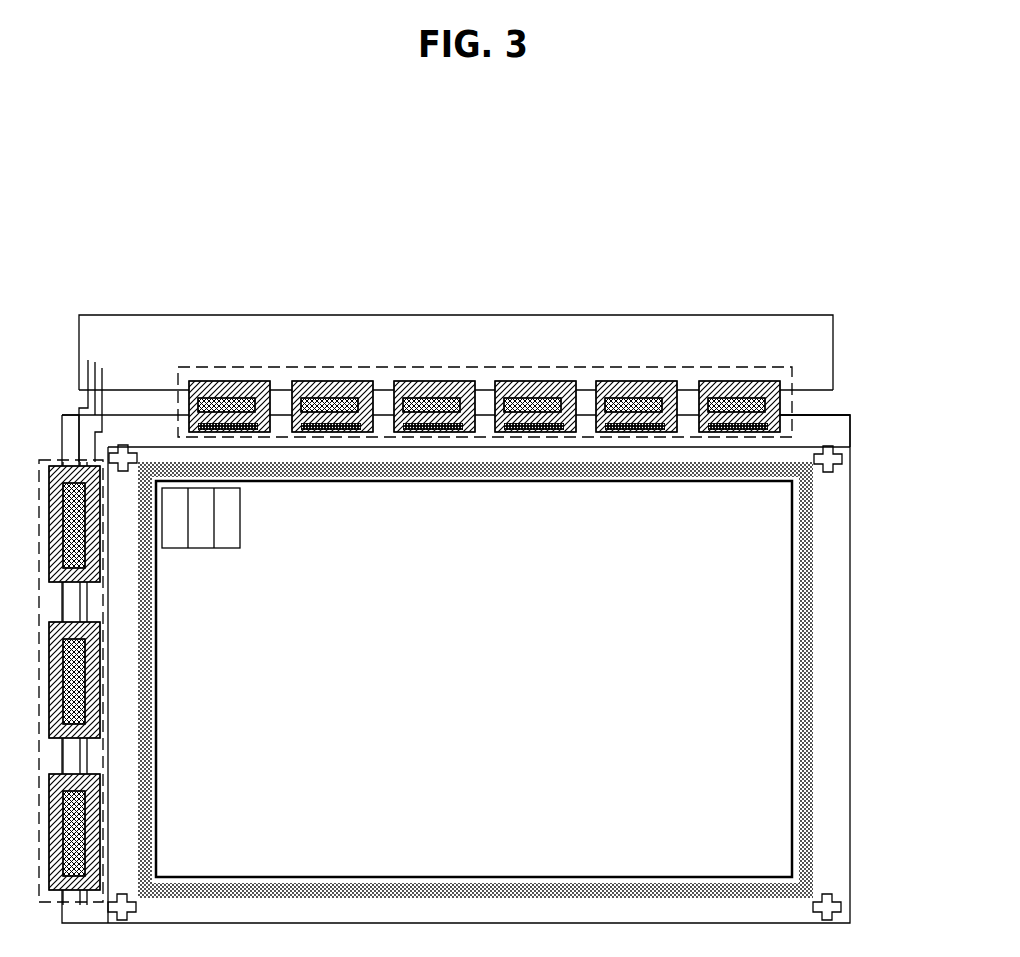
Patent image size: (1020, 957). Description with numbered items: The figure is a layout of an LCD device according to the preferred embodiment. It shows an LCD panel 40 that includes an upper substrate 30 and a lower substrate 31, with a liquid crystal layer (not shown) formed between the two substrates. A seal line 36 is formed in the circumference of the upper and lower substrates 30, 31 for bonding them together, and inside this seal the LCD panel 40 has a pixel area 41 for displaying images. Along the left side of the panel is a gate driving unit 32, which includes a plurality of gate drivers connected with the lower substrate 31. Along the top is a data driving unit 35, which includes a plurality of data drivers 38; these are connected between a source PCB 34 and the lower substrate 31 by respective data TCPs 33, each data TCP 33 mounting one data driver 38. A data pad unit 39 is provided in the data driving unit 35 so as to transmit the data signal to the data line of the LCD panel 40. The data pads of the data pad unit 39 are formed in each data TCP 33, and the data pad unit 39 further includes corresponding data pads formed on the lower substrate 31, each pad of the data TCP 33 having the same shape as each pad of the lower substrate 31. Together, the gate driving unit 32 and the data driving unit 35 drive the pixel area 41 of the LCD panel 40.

The upper substrate 30 is at (836, 591).
The lower substrate 31 is at (838, 415).
The gate driving unit 32 is at (60, 462).
The data TCP 33 is at (640, 381).
The source PCB 34 is at (303, 338).
The data driving unit 35 is at (727, 367).
The seal line 36 is at (807, 645).
The data driver 38 is at (214, 381).
The data pad unit 39 is at (247, 432).
The LCD panel 40 is at (858, 761).
The pixel area 41 is at (792, 838).